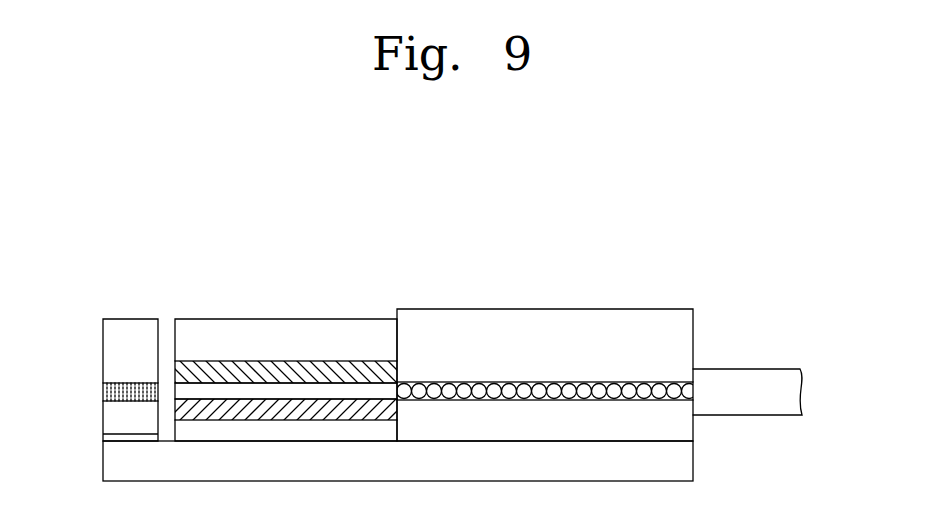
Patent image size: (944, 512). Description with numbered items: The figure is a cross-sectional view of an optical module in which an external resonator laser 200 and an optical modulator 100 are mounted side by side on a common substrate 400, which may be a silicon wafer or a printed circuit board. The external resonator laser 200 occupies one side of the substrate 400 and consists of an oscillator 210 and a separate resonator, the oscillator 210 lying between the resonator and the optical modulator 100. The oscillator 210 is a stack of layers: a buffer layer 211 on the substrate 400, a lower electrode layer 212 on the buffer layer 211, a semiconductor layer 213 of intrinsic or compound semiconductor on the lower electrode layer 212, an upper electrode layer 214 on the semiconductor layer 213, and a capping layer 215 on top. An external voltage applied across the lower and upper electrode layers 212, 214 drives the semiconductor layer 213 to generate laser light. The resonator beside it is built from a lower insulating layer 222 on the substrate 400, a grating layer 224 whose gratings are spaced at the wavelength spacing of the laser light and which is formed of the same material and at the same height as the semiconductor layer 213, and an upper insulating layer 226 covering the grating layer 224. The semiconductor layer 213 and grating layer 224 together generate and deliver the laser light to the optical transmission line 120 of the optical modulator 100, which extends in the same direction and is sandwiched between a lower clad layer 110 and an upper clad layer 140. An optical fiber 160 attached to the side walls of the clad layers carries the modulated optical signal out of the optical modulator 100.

The optical modulator 100 is at (663, 227).
The lower clad layer 110 is at (485, 433).
The optical transmission line 120 is at (558, 390).
The upper clad layer 140 is at (641, 353).
The optical fiber 160 is at (745, 378).
The external resonator laser 200 is at (335, 184).
The oscillator 210 is at (202, 227).
The buffer layer 211 is at (225, 430).
The lower electrode layer 212 is at (252, 410).
The semiconductor layer 213 is at (285, 390).
The upper electrode layer 214 is at (315, 370).
The capping layer 215 is at (350, 335).
The lower insulating layer 222 is at (118, 423).
The grating layer 224 is at (127, 390).
The upper insulating layer 226 is at (148, 333).
The substrate 400 is at (683, 463).